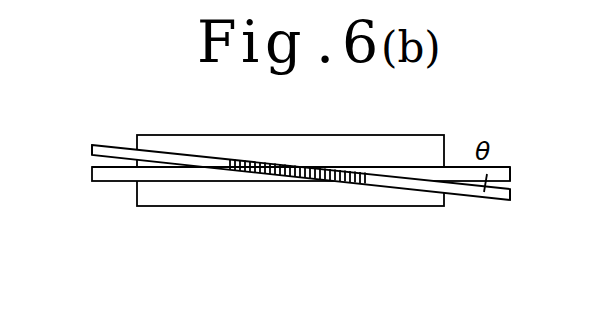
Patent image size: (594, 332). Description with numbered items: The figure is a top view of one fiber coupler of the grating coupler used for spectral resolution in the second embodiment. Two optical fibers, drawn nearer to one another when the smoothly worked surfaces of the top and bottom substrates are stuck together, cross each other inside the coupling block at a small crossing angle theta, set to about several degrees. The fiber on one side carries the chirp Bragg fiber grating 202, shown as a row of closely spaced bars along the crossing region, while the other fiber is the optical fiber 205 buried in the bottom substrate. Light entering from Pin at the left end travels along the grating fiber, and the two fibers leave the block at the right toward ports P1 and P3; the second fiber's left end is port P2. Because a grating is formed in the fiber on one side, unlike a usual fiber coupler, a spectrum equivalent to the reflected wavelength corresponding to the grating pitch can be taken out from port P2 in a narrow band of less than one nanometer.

The chirp Bragg fiber grating 202 is at (242, 177).
The optical fiber 205 is at (413, 170).
The input port Pin is at (65, 132).
The P1 port P1 is at (535, 205).
The P2 port P2 is at (280, 186).
The P3 port P3 is at (535, 159).